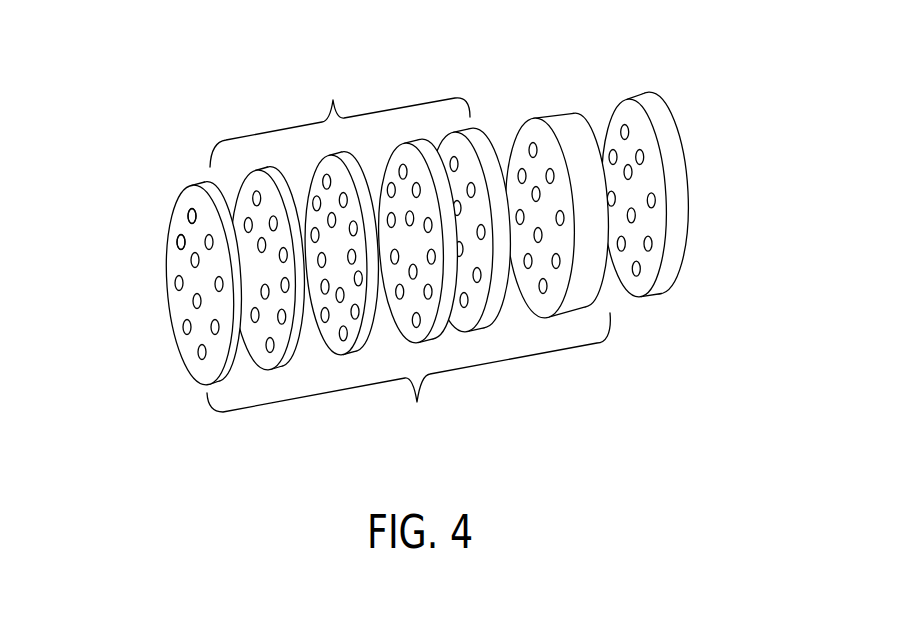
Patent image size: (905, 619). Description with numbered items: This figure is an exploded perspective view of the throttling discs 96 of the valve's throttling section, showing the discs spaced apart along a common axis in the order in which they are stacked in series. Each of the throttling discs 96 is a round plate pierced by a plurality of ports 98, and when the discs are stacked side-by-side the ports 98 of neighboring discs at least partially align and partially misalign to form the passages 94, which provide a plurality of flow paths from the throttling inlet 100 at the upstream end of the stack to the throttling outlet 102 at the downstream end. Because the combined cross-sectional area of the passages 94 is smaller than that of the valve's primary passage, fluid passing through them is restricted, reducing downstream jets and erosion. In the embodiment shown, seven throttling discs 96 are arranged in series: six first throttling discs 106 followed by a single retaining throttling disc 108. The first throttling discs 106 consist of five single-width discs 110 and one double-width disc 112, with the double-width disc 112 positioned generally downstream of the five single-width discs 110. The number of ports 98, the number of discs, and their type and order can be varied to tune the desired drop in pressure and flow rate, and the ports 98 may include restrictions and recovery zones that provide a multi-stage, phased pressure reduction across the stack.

The passages 94 is at (178, 233).
The throttling discs 96 is at (388, 238).
The ports 98 is at (185, 213).
The throttling inlet 100 is at (152, 306).
The throttling outlet 102 is at (419, 238).
The first throttling discs 106 is at (408, 375).
The retaining throttling disc 108 is at (663, 297).
The single-width discs 110 is at (340, 114).
The double-width disc 112 is at (557, 118).